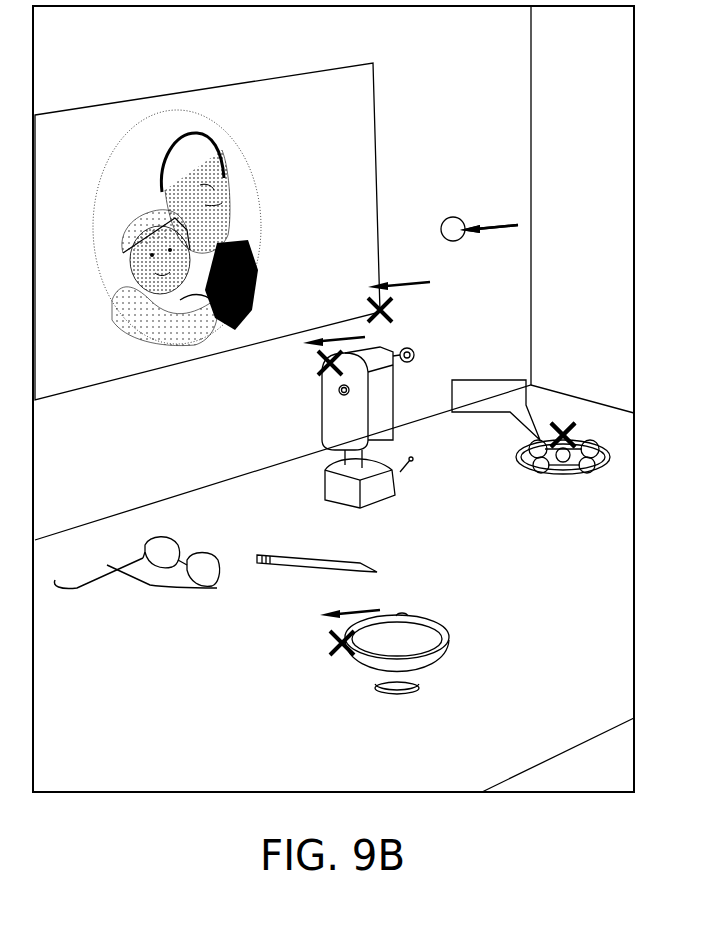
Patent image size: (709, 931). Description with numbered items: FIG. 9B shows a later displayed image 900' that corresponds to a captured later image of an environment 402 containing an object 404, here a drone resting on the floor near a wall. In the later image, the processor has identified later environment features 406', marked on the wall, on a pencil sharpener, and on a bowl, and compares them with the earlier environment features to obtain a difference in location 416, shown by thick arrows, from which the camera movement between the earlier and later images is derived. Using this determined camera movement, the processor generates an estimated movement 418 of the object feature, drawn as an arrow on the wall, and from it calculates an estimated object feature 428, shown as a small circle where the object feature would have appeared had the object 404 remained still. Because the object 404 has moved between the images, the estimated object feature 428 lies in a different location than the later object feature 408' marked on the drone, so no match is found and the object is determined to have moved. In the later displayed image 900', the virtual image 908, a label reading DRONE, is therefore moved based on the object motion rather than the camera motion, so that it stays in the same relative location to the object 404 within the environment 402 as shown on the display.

The later displayed image 900' is at (368, 399).
The environment 402 is at (593, 655).
The object 404 is at (532, 477).
The later environment features 406' is at (406, 495).
The later object feature 408' is at (583, 409).
The difference in location 416 is at (384, 276).
The estimated movement of object feature 418 is at (481, 216).
The estimated object feature 428 is at (458, 241).
The virtual image 908 is at (490, 380).